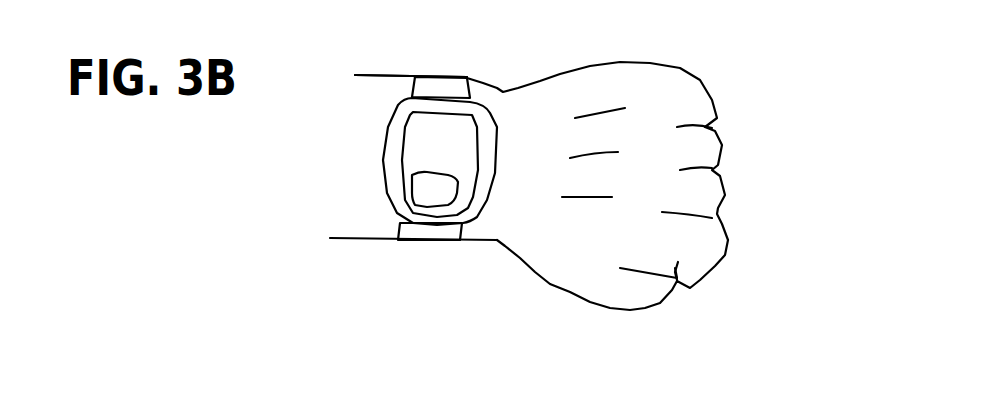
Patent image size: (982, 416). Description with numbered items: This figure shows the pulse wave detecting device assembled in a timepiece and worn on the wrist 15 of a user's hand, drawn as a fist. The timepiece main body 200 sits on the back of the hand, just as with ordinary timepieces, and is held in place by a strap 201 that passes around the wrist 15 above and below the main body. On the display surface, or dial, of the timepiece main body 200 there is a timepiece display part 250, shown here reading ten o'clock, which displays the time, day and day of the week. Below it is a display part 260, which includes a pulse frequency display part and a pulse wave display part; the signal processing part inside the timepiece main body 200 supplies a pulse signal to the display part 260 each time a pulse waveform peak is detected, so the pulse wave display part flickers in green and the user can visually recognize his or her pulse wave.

The arm (wrist) 15 is at (383, 100).
The timepiece main body 200 is at (463, 118).
The strap 201 is at (448, 228).
The timepiece display part 250 is at (408, 162).
The display part 260 is at (427, 198).